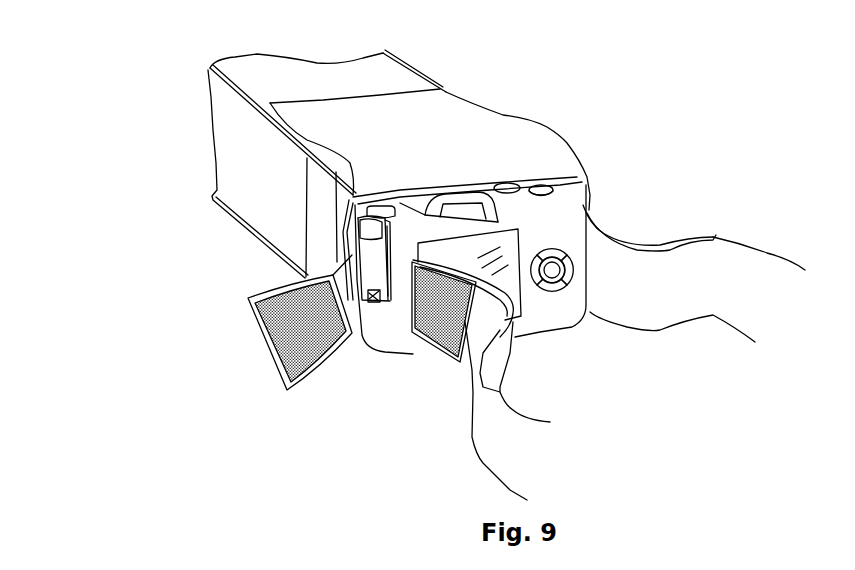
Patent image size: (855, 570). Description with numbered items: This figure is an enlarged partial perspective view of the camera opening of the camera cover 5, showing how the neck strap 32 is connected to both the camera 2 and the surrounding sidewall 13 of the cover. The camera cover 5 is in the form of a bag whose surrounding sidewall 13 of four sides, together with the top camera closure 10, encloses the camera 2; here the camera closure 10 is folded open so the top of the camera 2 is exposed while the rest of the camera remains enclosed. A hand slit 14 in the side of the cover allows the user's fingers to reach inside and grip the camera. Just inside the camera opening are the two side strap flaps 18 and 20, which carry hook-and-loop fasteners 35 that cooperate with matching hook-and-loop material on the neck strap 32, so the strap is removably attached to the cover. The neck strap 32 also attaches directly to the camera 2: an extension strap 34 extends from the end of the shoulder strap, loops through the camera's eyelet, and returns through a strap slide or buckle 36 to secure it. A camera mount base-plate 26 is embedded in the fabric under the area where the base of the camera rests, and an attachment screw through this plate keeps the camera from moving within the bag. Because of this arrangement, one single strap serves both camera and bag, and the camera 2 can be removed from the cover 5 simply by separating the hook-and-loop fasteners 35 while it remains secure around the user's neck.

The camera 2 is at (543, 218).
The camera cover 5 is at (515, 89).
The camera closure 10 is at (518, 153).
The surrounding sidewall 13 is at (367, 83).
The left side hand slit 14 is at (332, 233).
The strap flap 18 is at (293, 340).
The strap flap 20 is at (640, 247).
The camera mount base-plate 26 is at (515, 338).
The neck strap 32 is at (743, 300).
The extension strap 34 is at (368, 280).
The hook-and-loop fasteners 35 is at (293, 390).
The strap slide or buckle 36 is at (381, 243).